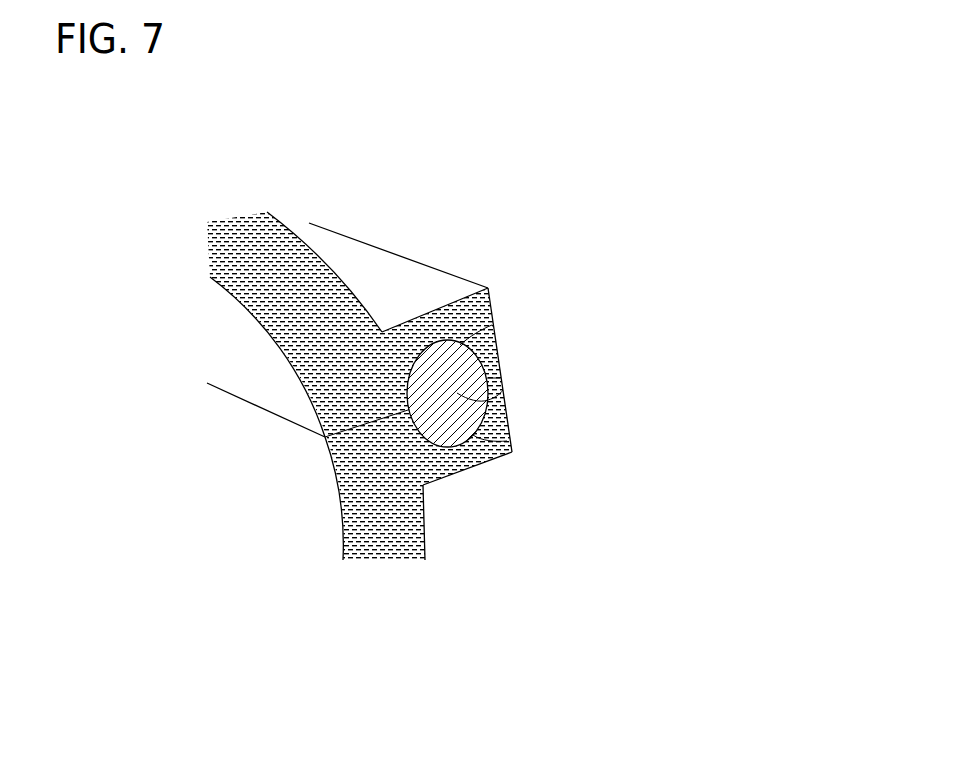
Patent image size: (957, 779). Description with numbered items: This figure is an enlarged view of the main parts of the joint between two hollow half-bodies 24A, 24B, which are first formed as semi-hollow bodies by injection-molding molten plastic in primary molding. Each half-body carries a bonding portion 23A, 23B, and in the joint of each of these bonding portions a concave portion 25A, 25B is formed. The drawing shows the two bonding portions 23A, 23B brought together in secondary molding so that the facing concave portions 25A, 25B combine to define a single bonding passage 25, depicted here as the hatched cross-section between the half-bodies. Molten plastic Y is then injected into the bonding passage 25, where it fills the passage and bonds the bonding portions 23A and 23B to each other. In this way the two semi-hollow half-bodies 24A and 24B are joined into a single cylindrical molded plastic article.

The bonding portion 23A is at (403, 277).
The bonding portion 23B is at (463, 463).
The hollow half-body 24A is at (244, 218).
The hollow half-body 24B is at (374, 548).
The bonding passage 25 is at (457, 395).
The concave portion 25A is at (495, 323).
The concave portion 25B is at (512, 440).
The molten plastic Y is at (503, 390).